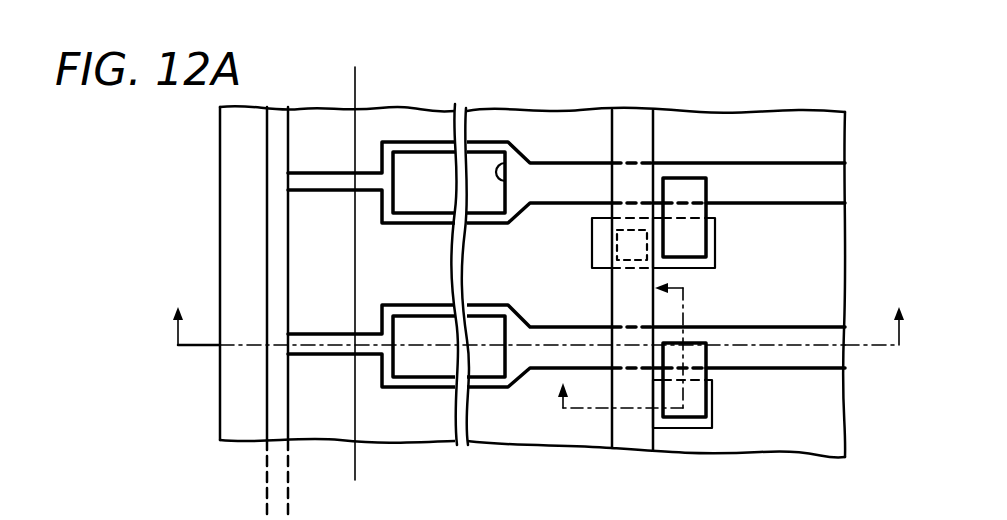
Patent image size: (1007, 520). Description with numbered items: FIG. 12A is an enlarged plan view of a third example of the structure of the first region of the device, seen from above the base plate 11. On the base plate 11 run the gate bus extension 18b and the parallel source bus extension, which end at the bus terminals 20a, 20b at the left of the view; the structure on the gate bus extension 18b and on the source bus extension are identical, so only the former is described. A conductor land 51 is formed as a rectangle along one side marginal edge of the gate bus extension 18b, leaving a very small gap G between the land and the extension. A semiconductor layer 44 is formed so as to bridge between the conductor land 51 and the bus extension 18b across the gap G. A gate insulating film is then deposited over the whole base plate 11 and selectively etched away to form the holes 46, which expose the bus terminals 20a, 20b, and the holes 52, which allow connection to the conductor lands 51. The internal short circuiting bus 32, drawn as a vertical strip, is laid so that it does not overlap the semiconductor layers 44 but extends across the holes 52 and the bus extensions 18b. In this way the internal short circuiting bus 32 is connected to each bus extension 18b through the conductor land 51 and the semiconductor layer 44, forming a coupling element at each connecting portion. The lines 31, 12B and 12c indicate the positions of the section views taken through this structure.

The base plate 11 is at (220, 190).
The scanning line 31 is at (276, 120).
The bus terminal 20a is at (425, 142).
The bus terminal 20b is at (566, 346).
The gate bus extension 18b is at (755, 172).
The hole 46 is at (508, 158).
The internal short circuiting bus 32 is at (626, 118).
The semiconductor layer 44 is at (682, 178).
The conductor land 51 is at (718, 262).
The hole 52 is at (620, 245).
The gap G is at (716, 377).
The section line 12B is at (544, 311).
The section line 12c is at (625, 351).